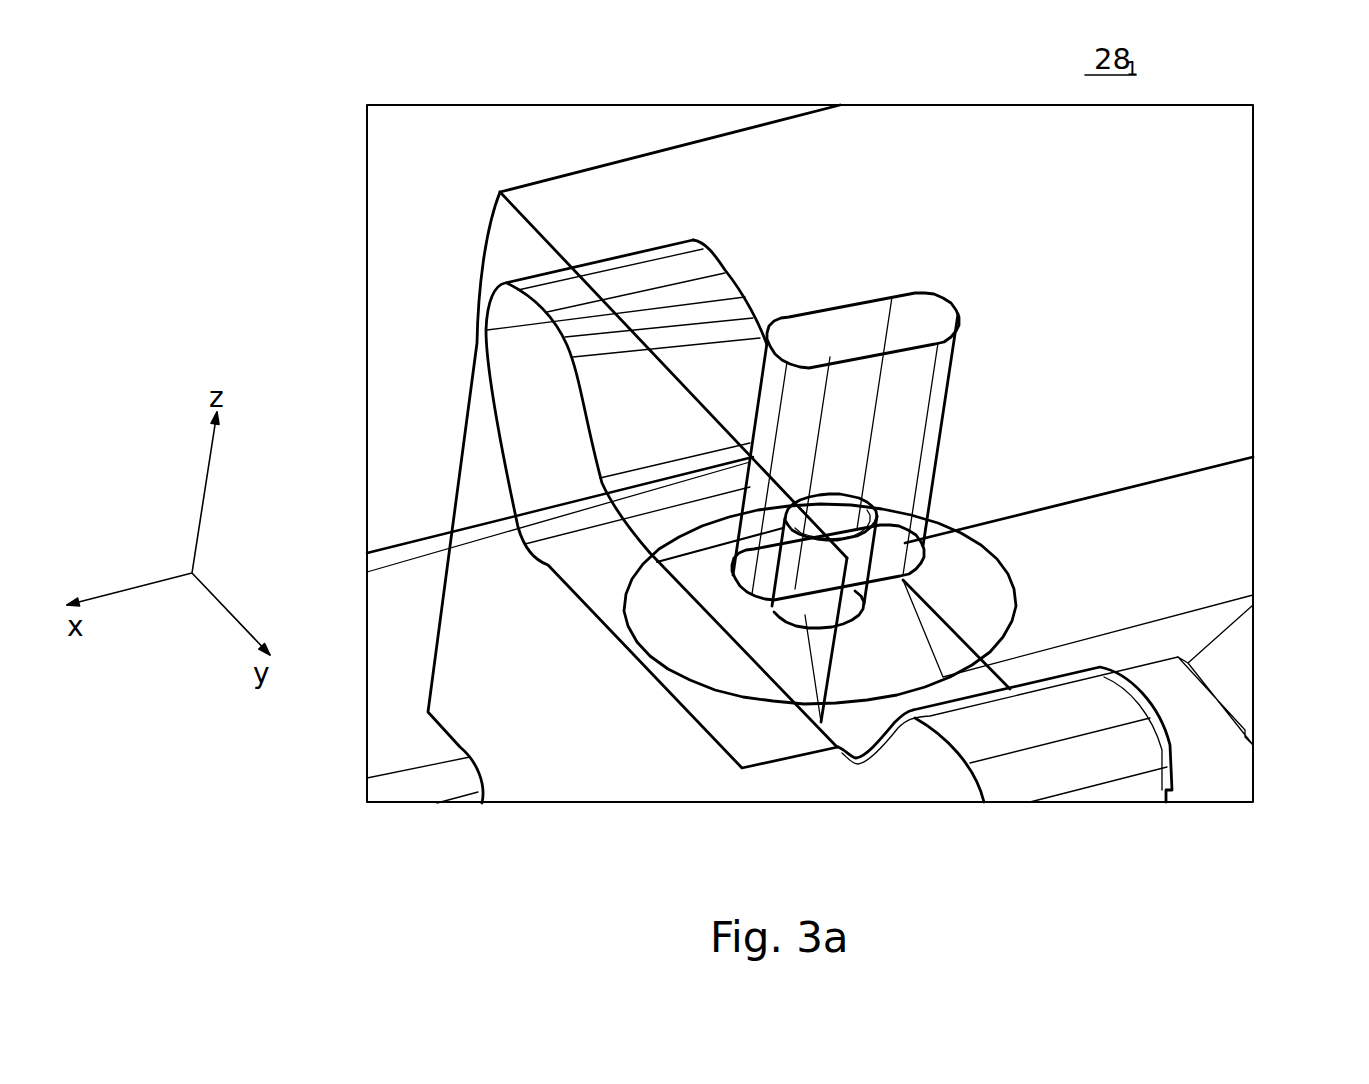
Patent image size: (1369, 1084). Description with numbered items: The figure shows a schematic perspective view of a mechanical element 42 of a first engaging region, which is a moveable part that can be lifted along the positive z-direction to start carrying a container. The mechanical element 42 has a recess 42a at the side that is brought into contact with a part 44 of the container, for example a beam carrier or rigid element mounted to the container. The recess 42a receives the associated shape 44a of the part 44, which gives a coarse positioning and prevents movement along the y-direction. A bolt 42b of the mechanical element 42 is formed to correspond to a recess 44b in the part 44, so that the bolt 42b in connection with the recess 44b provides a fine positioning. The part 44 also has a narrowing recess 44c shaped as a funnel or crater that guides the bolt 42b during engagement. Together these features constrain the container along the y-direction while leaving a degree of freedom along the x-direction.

The mechanical element 42 is at (458, 457).
The recess 42a is at (838, 755).
The bolt 42b is at (750, 590).
The part 44 is at (1242, 524).
The shape 44a is at (817, 733).
The recess 44b is at (848, 340).
The narrowing recess 44c is at (660, 630).